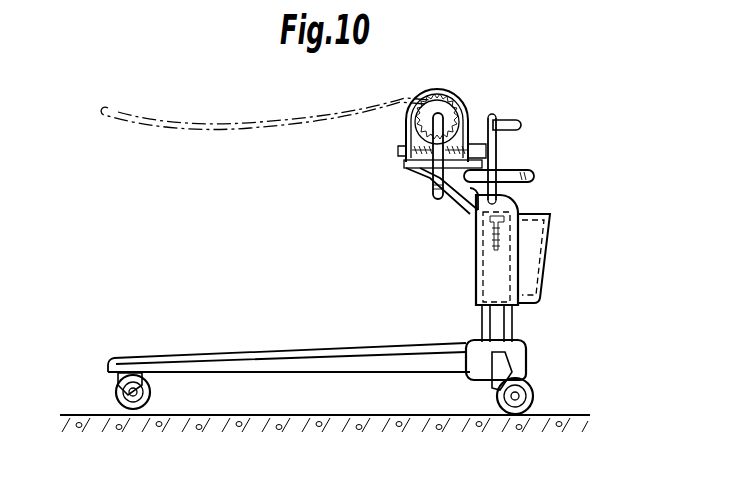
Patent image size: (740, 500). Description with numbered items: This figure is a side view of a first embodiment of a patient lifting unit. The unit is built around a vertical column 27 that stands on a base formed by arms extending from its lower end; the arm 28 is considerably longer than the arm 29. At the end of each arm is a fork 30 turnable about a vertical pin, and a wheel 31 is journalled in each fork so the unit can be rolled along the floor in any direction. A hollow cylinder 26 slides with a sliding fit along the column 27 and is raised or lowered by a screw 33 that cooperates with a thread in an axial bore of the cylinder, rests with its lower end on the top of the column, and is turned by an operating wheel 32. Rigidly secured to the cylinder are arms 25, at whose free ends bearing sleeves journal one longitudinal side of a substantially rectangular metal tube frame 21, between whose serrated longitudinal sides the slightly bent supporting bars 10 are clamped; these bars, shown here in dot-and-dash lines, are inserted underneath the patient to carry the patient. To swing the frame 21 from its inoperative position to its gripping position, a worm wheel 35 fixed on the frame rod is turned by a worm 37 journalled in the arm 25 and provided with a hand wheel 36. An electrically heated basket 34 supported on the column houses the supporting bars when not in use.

The supporting bar 10 is at (252, 128).
The metal tube frame 21 is at (438, 190).
The arm 25 is at (470, 190).
The hollow cylinder 26 is at (505, 278).
The vertical column 27 is at (500, 328).
The arm 28 is at (252, 365).
The arm 29 is at (520, 366).
The fork 30 is at (126, 392).
The wheel 31 is at (146, 396).
The operating wheel 32 is at (532, 174).
The screw 33 is at (508, 186).
The electrically heated basket 34 is at (534, 238).
The worm wheel 35 is at (440, 86).
The hand wheel 36 is at (496, 118).
The worm 37 is at (416, 168).